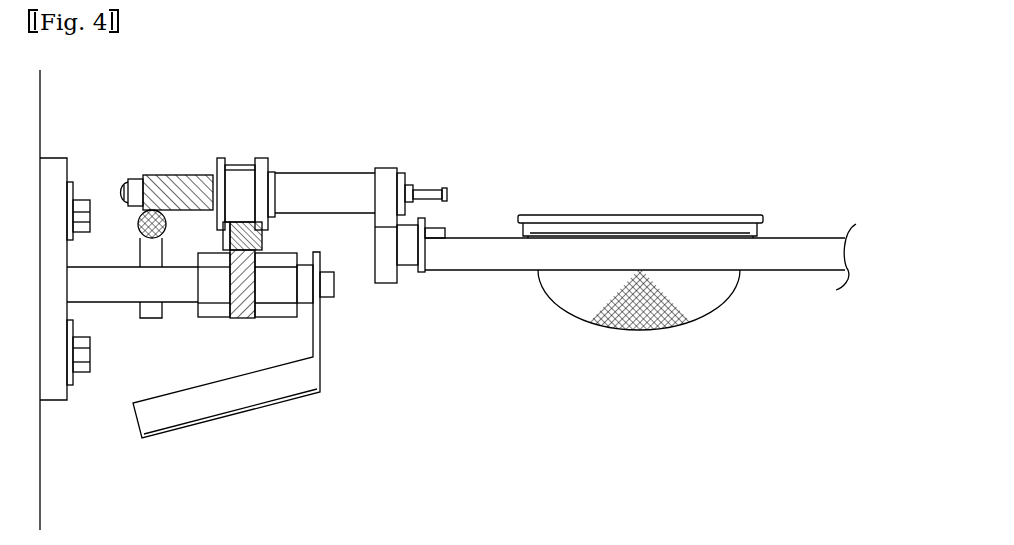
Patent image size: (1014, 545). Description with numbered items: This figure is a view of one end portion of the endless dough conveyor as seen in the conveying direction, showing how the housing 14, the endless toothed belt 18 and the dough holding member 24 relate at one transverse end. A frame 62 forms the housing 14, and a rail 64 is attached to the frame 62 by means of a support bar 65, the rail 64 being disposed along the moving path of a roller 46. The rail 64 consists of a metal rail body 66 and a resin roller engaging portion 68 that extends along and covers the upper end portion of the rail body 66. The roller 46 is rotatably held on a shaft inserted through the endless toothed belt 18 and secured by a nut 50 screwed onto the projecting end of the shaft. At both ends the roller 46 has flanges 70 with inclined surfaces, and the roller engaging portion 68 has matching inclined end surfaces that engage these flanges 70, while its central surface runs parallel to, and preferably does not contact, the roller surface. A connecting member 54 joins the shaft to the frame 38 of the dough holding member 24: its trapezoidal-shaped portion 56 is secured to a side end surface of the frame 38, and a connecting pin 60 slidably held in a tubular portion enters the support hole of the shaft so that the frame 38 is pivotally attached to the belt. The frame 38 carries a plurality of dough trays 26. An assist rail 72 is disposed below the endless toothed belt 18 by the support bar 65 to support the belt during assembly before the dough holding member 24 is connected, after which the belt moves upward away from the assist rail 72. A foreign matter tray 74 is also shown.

The housing 14 is at (110, 295).
The frame 62 is at (40, 122).
The support bar 65 is at (97, 303).
The assist rail 72 is at (134, 230).
The endless toothed belt 18 is at (185, 172).
The nut 50 is at (129, 176).
The flanges 70 is at (260, 158).
The roller 46 is at (269, 163).
The roller engaging portion 68 is at (222, 238).
The rail body 66 is at (265, 240).
The rail 64 is at (244, 323).
The connecting member 54 is at (333, 170).
The trapezoidal-shaped portion 56 is at (388, 285).
The connecting pin 60 is at (430, 186).
The frame 38 is at (772, 273).
The dough holding member 24 is at (650, 158).
The dough trays 26 is at (636, 336).
The foreign matter tray 74 is at (211, 425).